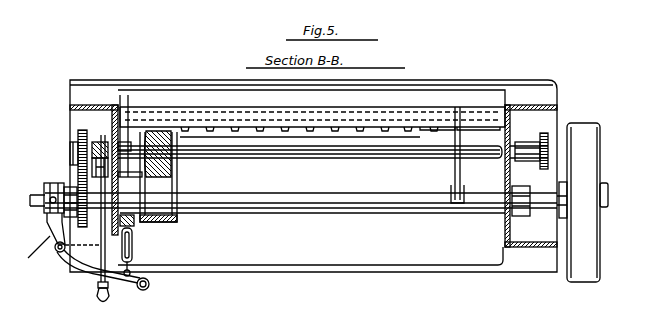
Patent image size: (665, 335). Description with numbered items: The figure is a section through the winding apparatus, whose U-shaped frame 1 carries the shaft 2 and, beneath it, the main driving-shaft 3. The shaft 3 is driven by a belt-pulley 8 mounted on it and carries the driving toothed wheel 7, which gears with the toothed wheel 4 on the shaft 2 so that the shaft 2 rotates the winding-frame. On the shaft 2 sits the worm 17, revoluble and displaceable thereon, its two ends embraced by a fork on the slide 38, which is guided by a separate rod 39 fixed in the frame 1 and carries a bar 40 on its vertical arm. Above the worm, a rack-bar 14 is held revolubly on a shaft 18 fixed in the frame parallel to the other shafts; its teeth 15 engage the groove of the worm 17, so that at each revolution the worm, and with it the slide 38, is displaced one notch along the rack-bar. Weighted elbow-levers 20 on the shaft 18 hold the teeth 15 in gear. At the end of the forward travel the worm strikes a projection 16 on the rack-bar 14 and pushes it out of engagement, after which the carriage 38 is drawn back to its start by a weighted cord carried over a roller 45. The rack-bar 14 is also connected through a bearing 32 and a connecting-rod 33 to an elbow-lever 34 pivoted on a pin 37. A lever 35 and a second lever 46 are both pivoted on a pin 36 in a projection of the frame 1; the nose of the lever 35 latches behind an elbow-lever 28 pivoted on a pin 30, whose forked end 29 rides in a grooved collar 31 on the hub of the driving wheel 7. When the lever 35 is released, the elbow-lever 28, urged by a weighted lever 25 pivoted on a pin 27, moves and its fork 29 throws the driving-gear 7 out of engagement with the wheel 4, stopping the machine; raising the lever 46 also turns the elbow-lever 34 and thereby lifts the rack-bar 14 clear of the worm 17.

The U-shaped frame 1 is at (90, 91).
The shaft 2 is at (297, 159).
The main driving-shaft 3 is at (328, 208).
The toothed wheel 4 is at (80, 130).
The toothed wheel 7 is at (67, 226).
The belt-pulley 8 is at (588, 148).
The rack-bar 14 is at (418, 110).
The tooth 15 is at (255, 128).
The projection 16 is at (492, 128).
The worm 17 is at (178, 148).
The shaft 18 is at (328, 108).
The elbow-lever 20 is at (453, 172).
The weighted lever 25 is at (132, 250).
The pin 27 is at (132, 223).
The elbow-lever 28 is at (80, 268).
The forked end 29 is at (50, 217).
The pin 30 is at (58, 250).
The grooved collar 31 is at (46, 183).
The bearing 32 is at (125, 108).
The connecting-rod 33 is at (129, 137).
The elbow-lever 34 is at (72, 147).
The lever 35 is at (97, 307).
The pin 36 is at (75, 217).
The pin 37 is at (110, 140).
The slide 38 is at (177, 182).
The rod 39 is at (435, 214).
The bar 40 is at (167, 222).
The roller 45 is at (93, 167).
The lever 46 is at (107, 280).